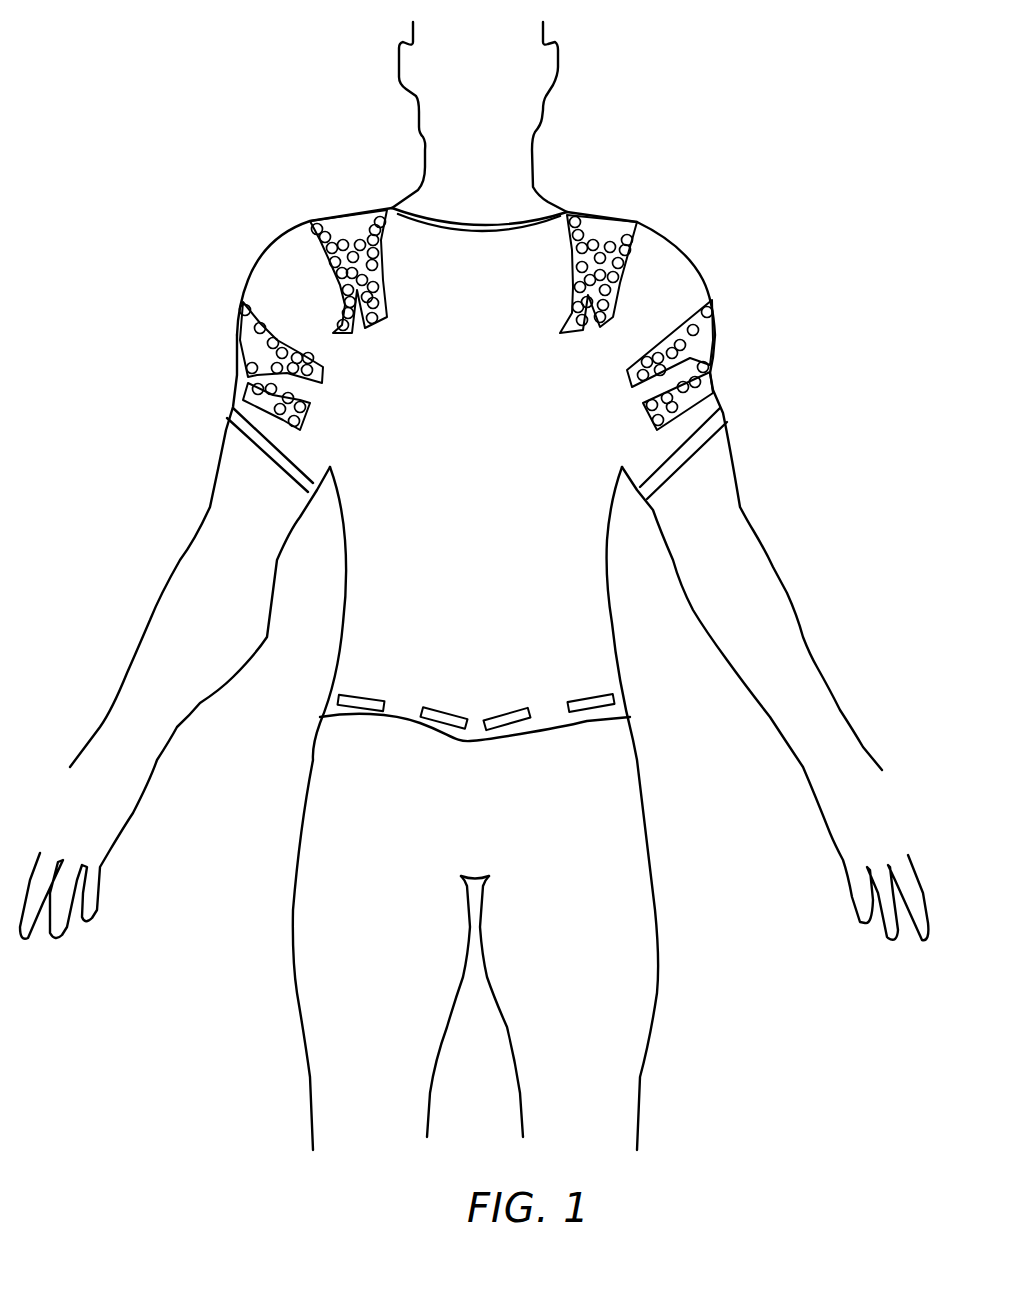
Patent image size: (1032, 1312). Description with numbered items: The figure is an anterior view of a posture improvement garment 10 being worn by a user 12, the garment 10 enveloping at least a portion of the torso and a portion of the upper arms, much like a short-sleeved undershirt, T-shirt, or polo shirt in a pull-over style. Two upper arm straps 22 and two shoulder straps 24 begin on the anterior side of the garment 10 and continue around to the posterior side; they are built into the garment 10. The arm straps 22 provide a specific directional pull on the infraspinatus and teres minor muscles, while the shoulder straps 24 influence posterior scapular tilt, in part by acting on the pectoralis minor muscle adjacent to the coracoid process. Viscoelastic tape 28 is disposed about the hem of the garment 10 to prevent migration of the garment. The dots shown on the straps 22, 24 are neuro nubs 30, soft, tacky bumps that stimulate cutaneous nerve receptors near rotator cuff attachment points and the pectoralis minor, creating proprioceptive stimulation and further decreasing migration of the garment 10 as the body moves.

The posture improvement garment 10 is at (395, 527).
The user 12 is at (545, 138).
The upper arm straps 22 is at (244, 351).
The shoulder straps 24 is at (352, 235).
The viscoelastic tape 28 is at (577, 700).
The neuro nubs 30 is at (323, 243).